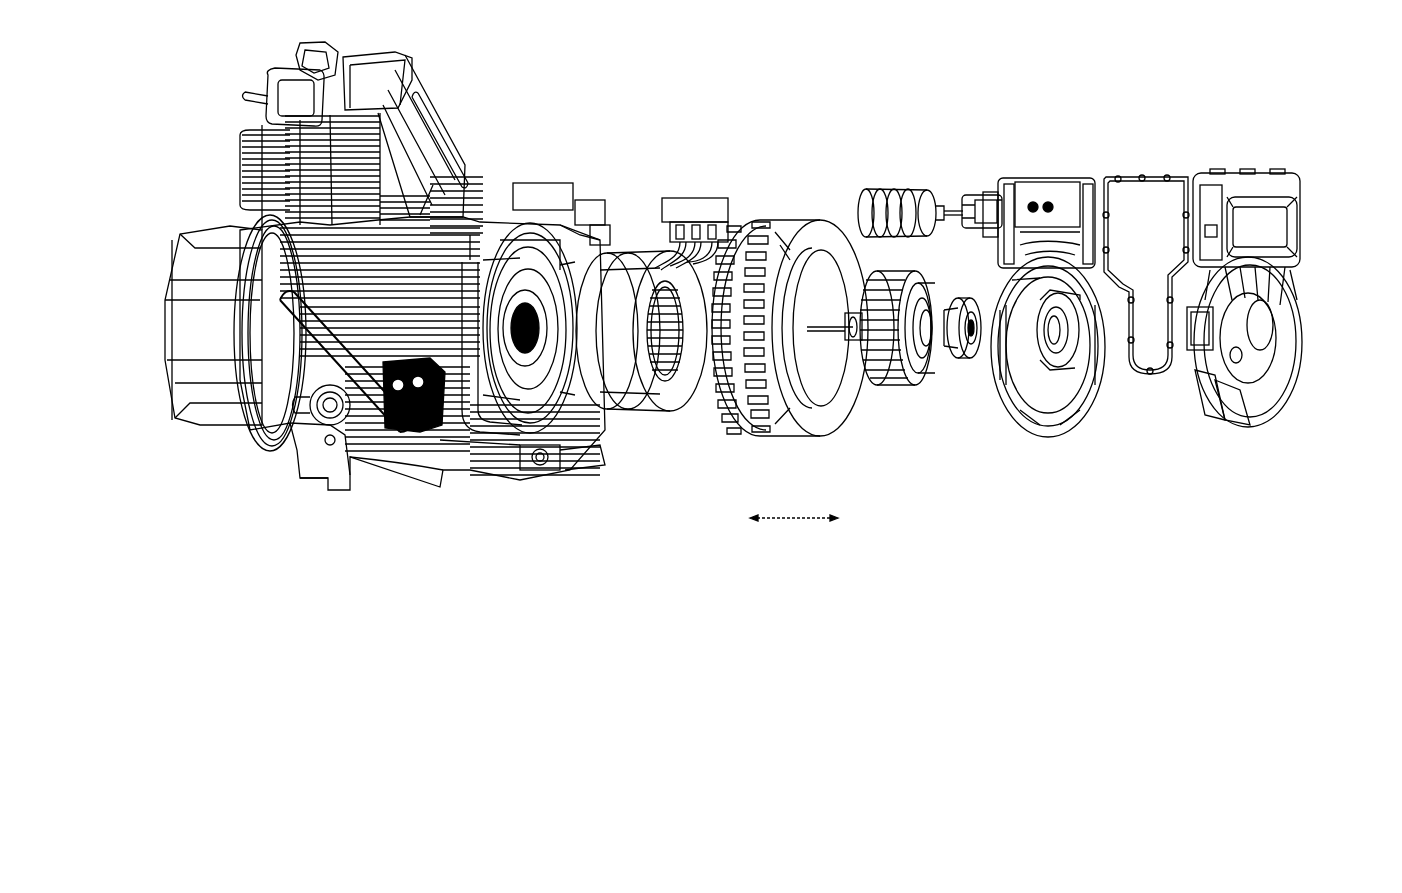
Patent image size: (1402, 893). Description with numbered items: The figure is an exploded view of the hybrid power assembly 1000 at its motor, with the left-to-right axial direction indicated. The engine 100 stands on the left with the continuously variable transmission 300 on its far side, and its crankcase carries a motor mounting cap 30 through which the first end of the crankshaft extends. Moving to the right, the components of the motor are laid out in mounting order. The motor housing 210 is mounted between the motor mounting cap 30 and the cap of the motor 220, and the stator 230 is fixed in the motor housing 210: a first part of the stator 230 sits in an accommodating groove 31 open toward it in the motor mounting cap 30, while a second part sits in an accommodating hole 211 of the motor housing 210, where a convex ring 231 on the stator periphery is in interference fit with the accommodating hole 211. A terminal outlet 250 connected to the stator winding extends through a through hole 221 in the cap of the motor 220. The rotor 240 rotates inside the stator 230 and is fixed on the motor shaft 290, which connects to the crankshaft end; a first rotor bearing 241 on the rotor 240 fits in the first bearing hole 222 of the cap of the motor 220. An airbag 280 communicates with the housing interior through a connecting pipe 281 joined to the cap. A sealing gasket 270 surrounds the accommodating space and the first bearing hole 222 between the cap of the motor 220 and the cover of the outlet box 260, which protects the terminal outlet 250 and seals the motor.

The hybrid power assembly 1000 is at (713, 89).
The engine 100 is at (478, 177).
The motor mounting cap 30 is at (547, 225).
The accommodating groove 31 is at (556, 472).
The continuously variable transmission 300 is at (193, 313).
The terminal outlet 250 is at (710, 197).
The stator 230 is at (652, 400).
The convex ring 231 is at (632, 440).
The motor housing 210 is at (792, 222).
The accommodating hole 211 is at (803, 430).
The motor shaft 290 is at (851, 403).
The rotor 240 is at (905, 388).
The first rotor bearing 241 is at (963, 360).
The airbag 280 is at (912, 190).
The connecting pipe 281 is at (993, 186).
The through hole 221 is at (1068, 178).
The cap of the motor 220 is at (1052, 430).
The first bearing hole 222 is at (1070, 345).
The sealing gasket 270 is at (1183, 176).
The cover of the outlet box 260 is at (1273, 226).